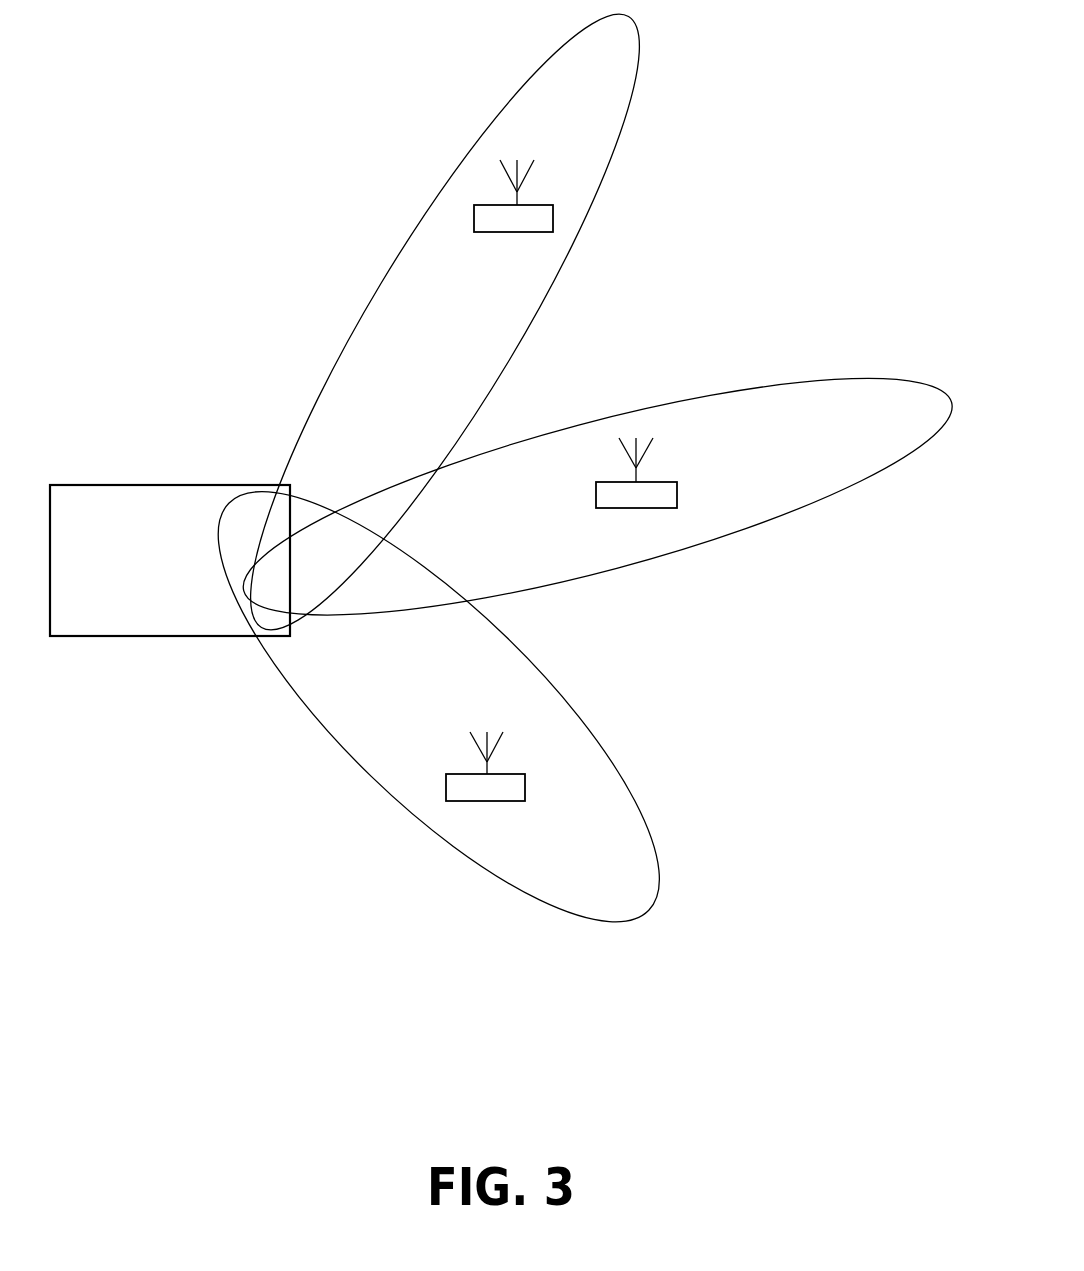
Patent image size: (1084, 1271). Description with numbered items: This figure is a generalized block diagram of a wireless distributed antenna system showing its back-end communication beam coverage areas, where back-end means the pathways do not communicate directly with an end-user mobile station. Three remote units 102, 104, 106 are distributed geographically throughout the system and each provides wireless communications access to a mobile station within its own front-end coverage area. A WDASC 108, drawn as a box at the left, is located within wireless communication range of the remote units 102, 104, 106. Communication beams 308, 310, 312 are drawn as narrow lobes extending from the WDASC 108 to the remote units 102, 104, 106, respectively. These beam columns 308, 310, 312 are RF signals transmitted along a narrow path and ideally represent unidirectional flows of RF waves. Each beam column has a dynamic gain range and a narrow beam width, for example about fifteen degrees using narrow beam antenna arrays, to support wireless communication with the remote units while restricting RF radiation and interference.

The remote unit 102 is at (553, 217).
The remote unit 104 is at (677, 495).
The remote unit 106 is at (525, 787).
The WDASC 108 is at (148, 556).
The communication beam 308 is at (630, 107).
The communication beam 310 is at (848, 487).
The communication beam 312 is at (605, 747).